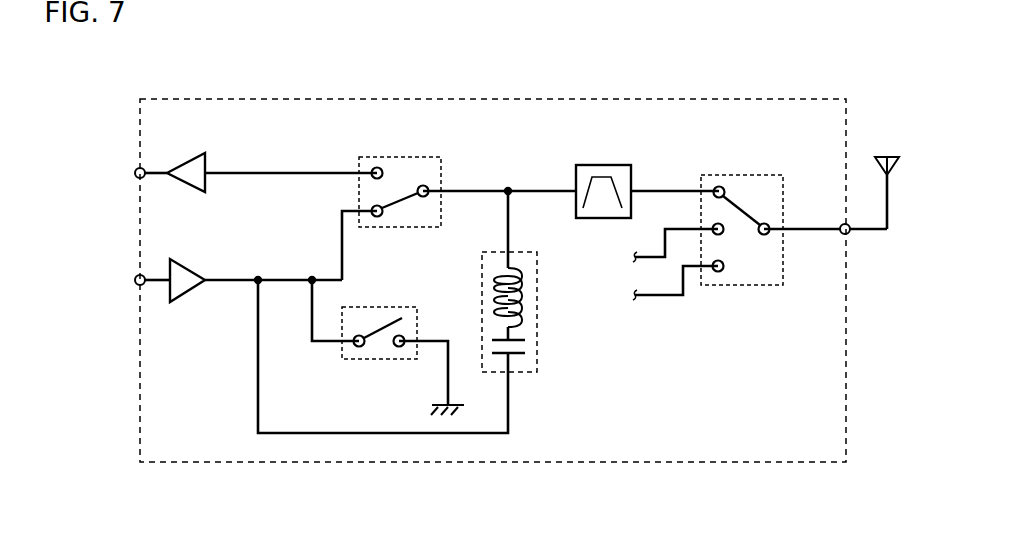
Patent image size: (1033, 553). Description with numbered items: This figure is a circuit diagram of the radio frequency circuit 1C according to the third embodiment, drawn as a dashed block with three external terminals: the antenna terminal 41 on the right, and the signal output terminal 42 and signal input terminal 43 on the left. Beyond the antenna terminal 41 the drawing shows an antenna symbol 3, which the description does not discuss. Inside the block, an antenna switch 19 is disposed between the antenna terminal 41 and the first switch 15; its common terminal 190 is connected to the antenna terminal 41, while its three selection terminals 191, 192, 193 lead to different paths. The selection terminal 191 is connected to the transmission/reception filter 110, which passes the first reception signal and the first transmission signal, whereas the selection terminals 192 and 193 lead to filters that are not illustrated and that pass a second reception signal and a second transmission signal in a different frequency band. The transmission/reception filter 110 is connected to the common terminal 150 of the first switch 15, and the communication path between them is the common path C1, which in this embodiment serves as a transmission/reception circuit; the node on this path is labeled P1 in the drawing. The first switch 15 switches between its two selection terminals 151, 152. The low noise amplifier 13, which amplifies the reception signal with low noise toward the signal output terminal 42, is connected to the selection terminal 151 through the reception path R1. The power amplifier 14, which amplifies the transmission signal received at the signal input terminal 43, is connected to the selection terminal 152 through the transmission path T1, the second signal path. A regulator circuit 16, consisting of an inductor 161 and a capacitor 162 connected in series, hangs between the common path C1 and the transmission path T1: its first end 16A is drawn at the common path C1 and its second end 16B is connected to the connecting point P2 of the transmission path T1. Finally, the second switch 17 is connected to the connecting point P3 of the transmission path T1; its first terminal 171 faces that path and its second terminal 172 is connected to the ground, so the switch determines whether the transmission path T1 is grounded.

The radio frequency circuit 1C is at (805, 93).
The antenna 3 is at (897, 163).
The low noise amplifier 13 is at (192, 167).
The power amplifier 14 is at (180, 289).
The first switch 15 is at (425, 193).
The common terminal 150 is at (430, 196).
The selection terminal 151 is at (377, 166).
The selection terminal 152 is at (378, 217).
The regulator circuit 16 is at (506, 315).
The inductor 161 is at (526, 283).
The capacitor 162 is at (528, 348).
The first end of resonant circuit 16A is at (510, 251).
The second end 16B is at (509, 374).
The second switch 17 is at (394, 346).
The first terminal 171 is at (356, 348).
The second terminal 172 is at (401, 348).
The antenna switch 19 is at (742, 227).
The common terminal 190 is at (770, 225).
The selection terminal 191 is at (718, 186).
The selection terminal 192 is at (712, 225).
The selection terminal 193 is at (718, 272).
The transmission/reception filter 110 is at (600, 165).
The antenna terminal 41 is at (850, 234).
The signal output terminal 42 is at (134, 174).
The signal input terminal 43 is at (134, 281).
The reception path R1 is at (278, 171).
The transmission path T1 is at (230, 283).
The common path C1 is at (475, 189).
The node P1 is at (510, 189).
The connecting point P2 is at (258, 277).
The connecting point P3 is at (313, 277).